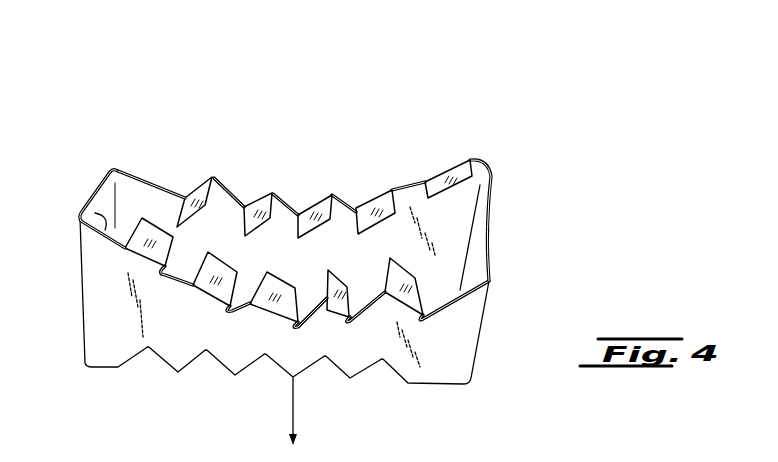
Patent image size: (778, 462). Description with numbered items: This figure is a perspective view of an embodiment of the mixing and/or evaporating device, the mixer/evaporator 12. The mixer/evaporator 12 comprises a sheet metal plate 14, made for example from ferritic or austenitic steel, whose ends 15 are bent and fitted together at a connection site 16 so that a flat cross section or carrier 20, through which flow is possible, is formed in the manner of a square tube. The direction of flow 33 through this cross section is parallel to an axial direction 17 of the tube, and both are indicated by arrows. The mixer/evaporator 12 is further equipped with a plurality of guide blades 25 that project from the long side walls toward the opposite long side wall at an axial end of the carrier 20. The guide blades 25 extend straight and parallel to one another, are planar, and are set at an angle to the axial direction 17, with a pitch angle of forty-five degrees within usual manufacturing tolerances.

The mixer/evaporator 12 is at (118, 116).
The sheet metal plate 14 is at (134, 171).
The ends 15 is at (80, 208).
The connection site 16 is at (100, 245).
The axial direction 17 is at (289, 292).
The carrier 20 is at (497, 182).
The guide blades 25 is at (445, 163).
The direction of flow 33 is at (259, 136).